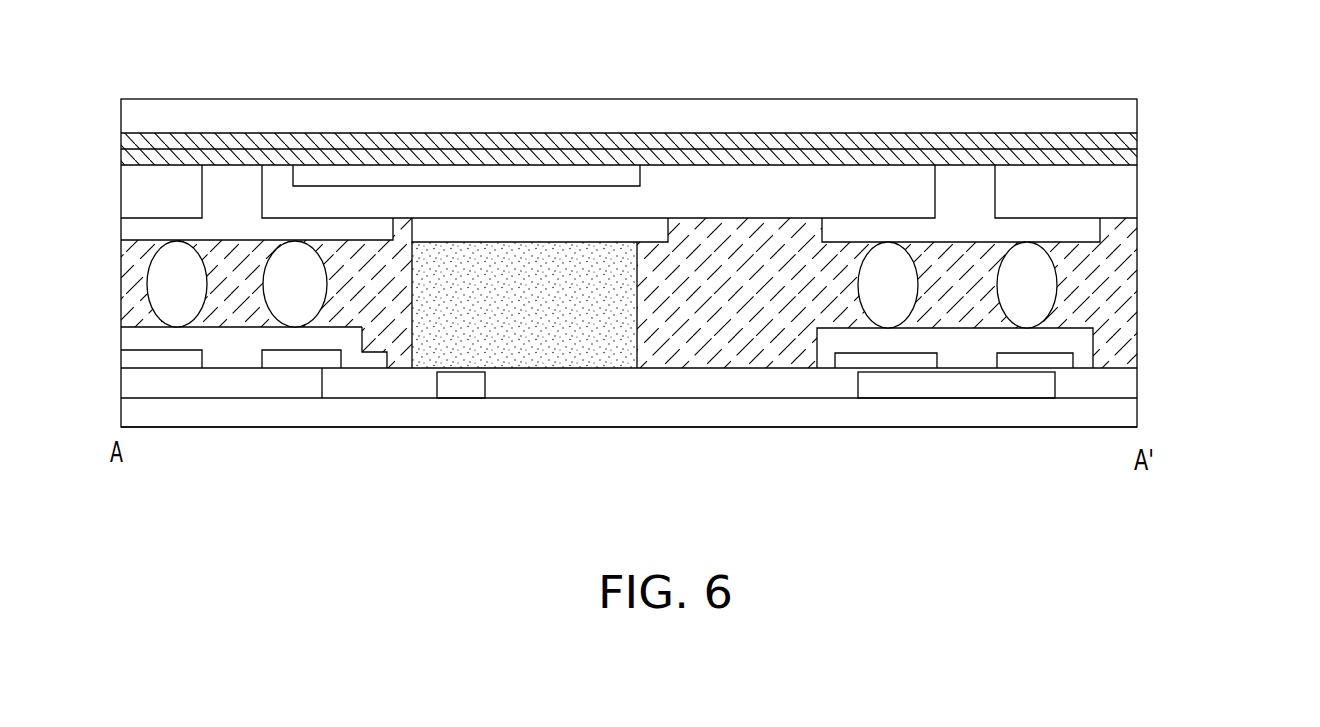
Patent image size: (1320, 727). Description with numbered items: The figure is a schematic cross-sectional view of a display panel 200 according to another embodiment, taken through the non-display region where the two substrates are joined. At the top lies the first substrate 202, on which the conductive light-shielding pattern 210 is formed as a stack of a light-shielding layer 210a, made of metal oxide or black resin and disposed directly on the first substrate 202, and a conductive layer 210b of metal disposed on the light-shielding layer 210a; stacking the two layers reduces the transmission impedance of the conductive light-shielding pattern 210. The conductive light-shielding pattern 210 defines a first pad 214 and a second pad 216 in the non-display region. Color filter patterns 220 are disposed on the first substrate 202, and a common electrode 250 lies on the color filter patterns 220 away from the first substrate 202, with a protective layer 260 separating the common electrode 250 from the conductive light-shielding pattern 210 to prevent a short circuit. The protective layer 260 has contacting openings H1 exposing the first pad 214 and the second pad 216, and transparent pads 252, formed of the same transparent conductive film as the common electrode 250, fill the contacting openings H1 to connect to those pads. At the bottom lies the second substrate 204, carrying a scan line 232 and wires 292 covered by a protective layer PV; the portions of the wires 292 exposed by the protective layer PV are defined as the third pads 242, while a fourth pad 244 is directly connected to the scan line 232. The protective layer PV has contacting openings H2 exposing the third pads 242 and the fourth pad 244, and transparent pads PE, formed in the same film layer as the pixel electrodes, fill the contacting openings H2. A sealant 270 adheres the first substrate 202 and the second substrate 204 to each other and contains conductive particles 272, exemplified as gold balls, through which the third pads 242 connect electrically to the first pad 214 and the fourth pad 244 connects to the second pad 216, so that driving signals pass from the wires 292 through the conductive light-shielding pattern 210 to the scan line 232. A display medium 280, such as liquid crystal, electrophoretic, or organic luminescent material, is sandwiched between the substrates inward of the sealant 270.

The display panel 200 is at (1170, 557).
The first substrate 202 is at (725, 122).
The second substrate 204 is at (1063, 412).
The conductive light-shielding pattern 210 is at (706, 145).
The light-shielding layer 210a is at (1125, 142).
The conductive layer 210b is at (1127, 158).
The first pad 214 is at (217, 162).
The second pad 216 is at (957, 165).
The color filter pattern 220 is at (342, 173).
The scan line 232 is at (462, 392).
The third pad 242 is at (230, 365).
The fourth pad 244 is at (973, 370).
The common electrode 250 is at (460, 230).
The transparent pad 252 is at (168, 227).
The protective layer 260 is at (530, 202).
The sealant 270 is at (713, 353).
The conductive particle 272 is at (172, 273).
The display medium 280 is at (572, 353).
The wire 292 is at (295, 388).
The contacting opening H1 is at (203, 196).
The contacting opening H2 is at (937, 362).
The transparent pad PE is at (248, 362).
The protective layer PV is at (390, 388).